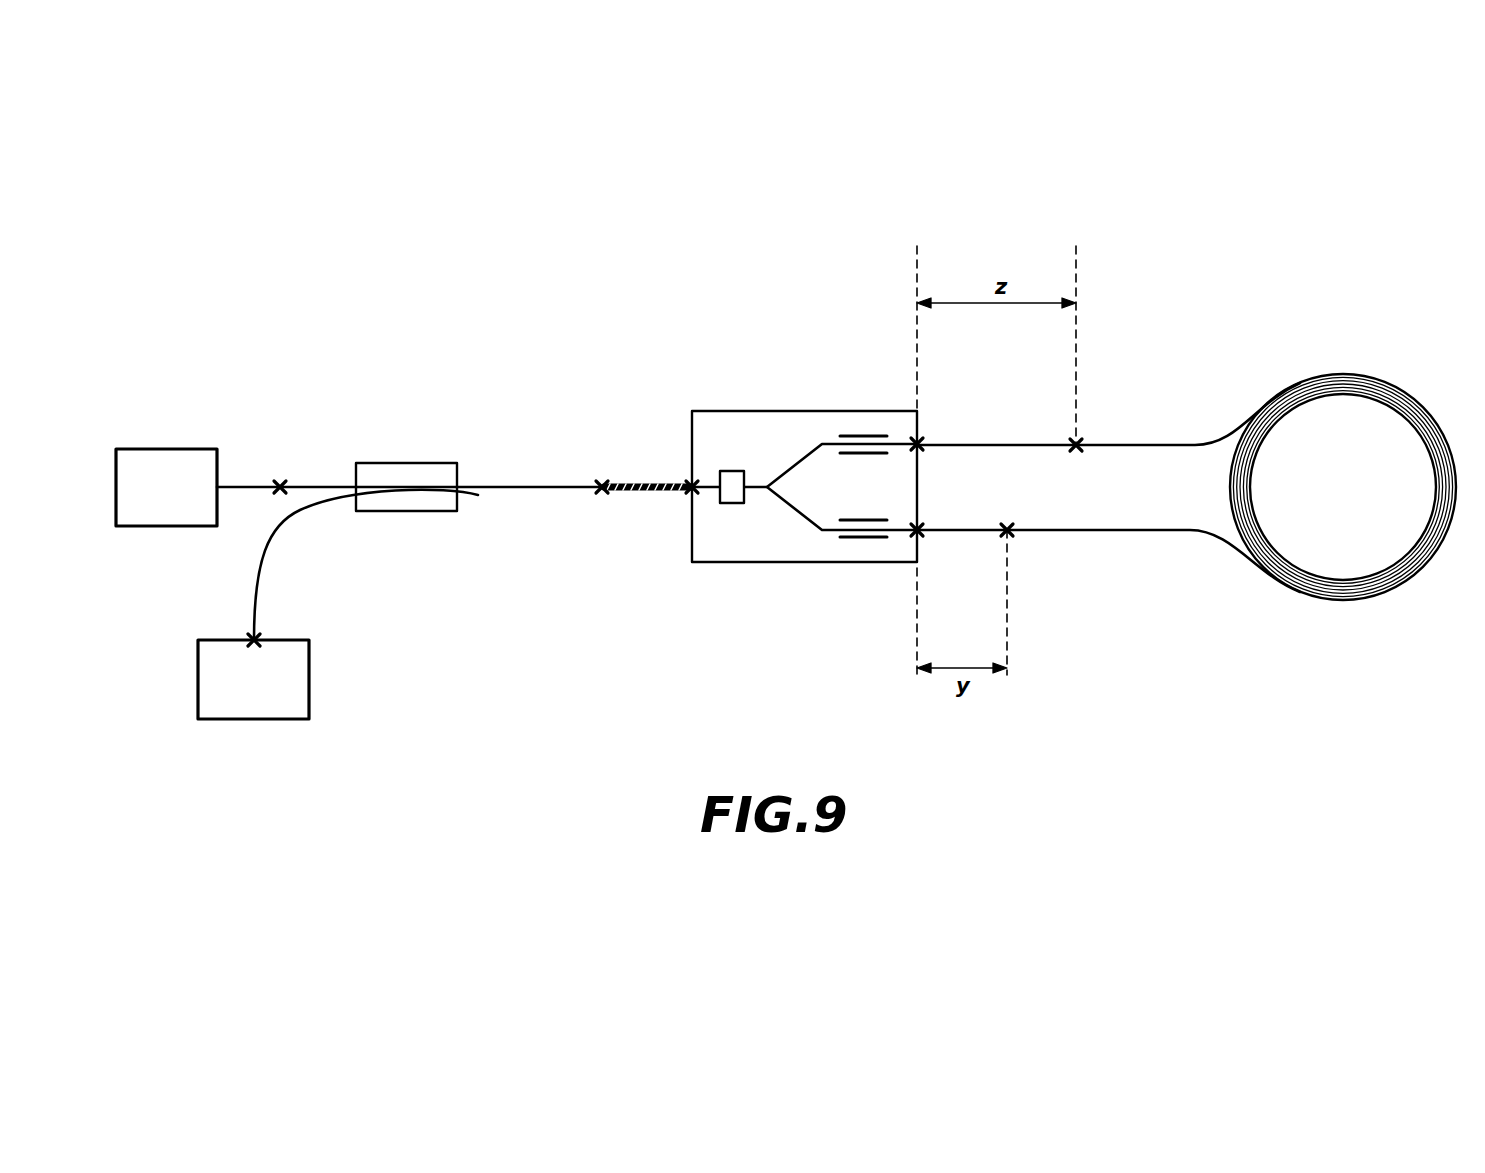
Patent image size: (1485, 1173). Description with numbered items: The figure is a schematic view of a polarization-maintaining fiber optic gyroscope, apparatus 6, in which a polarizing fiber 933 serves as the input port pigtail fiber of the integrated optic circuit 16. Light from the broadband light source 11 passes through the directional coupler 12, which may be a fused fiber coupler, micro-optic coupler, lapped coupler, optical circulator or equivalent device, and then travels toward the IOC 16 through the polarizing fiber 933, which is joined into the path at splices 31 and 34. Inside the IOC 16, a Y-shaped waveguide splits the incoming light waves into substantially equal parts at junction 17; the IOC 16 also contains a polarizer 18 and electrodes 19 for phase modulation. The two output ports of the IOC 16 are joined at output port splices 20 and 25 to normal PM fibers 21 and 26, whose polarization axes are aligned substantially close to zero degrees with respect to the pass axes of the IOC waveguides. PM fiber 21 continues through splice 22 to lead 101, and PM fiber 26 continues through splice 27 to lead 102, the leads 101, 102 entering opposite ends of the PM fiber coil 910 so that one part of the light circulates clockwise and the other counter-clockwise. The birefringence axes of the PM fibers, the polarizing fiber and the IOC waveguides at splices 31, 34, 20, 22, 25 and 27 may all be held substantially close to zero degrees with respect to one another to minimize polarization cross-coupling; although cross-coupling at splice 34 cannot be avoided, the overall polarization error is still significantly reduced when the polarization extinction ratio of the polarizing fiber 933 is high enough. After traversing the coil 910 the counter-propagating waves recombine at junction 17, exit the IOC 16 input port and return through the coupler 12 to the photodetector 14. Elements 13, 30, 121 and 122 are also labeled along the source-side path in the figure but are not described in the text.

The apparatus 6 is at (522, 238).
The broadband light source 11 is at (158, 449).
The directional coupler 12 is at (405, 463).
The coupler to photodetector 13 is at (258, 639).
The photodetector 14 is at (278, 720).
The integrated optic circuit 16 is at (778, 411).
The junction 17 is at (767, 490).
The polarizer 18 is at (734, 471).
The electrodes 19 is at (851, 539).
The output port splice 20 is at (915, 442).
The PM fiber 21 is at (971, 445).
The splice 22 is at (1076, 445).
The output port splice 25 is at (915, 535).
The PM fiber 26 is at (945, 531).
The splice 27 is at (1007, 529).
The coupler 30 is at (280, 485).
The splice 31 is at (602, 492).
The splice 34 is at (691, 492).
The lead 101 is at (1140, 445).
The lead 102 is at (1140, 531).
The fiber segment 121 is at (328, 486).
The fiber segment 122 is at (479, 486).
The PM fiber coil 910 is at (1367, 378).
The polarizing fiber 933 is at (650, 485).